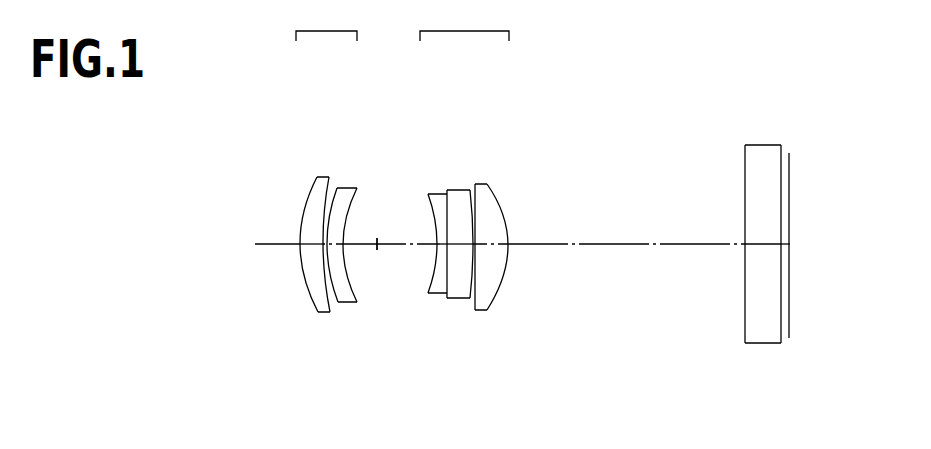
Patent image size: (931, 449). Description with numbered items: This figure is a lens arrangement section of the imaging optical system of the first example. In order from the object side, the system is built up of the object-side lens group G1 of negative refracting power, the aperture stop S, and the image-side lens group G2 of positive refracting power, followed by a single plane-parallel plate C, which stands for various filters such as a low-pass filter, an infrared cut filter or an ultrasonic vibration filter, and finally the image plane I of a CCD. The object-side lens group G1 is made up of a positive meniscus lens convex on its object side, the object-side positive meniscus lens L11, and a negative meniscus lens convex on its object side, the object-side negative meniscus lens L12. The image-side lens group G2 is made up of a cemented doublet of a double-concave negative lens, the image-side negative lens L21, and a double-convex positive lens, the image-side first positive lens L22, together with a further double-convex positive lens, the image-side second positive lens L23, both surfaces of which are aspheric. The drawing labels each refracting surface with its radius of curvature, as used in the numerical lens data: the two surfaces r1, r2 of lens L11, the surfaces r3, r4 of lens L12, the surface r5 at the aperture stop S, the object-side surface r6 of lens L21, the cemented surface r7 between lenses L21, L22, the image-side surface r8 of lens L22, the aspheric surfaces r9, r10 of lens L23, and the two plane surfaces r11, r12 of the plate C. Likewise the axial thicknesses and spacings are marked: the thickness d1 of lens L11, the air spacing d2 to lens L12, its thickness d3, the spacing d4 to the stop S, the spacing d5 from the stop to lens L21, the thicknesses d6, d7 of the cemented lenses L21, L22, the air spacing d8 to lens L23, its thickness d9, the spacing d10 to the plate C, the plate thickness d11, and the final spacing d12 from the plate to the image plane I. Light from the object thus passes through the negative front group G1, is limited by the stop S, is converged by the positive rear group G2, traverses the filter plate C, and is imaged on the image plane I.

The object-side lens group G1 is at (326, 22).
The image-side lens group G2 is at (464, 22).
The object-side positive meniscus lens L11 is at (317, 176).
The object-side negative meniscus lens L12 is at (345, 187).
The image-side negative lens L21 is at (427, 192).
The image-side first positive lens L22 is at (449, 188).
The image-side second positive lens L23 is at (490, 186).
The radius of curvature of first lens surface r1 is at (303, 197).
The radius of curvature of second lens surface r2 is at (320, 177).
The radius of curvature of third lens surface r3 is at (336, 188).
The radius of curvature of fourth lens surface r4 is at (356, 188).
The radius of curvature of fifth surface r5 is at (377, 206).
The radius of curvature of sixth lens surface r6 is at (428, 207).
The radius of curvature of seventh lens surface r7 is at (444, 192).
The radius of curvature of eighth lens surface r8 is at (468, 190).
The radius of curvature of ninth lens surface r9 is at (477, 183).
The radius of curvature of tenth lens surface r10 is at (505, 194).
The radius of curvature of eleventh surface r11 is at (744, 156).
The radius of curvature of twelfth surface r12 is at (784, 152).
The thickness of first lens d1 is at (313, 259).
The spacing between first and second lenses d2 is at (333, 307).
The thickness of second lens d3 is at (343, 296).
The spacing between second lens and aperture stop d4 is at (360, 259).
The spacing between aperture stop and image-side lens group d5 is at (408, 259).
The thickness of negative lens L21 d6 is at (432, 284).
The thickness of positive lens L22 d7 is at (460, 259).
The spacing between L22 and L23 d8 is at (466, 298).
The thickness of positive lens L23 d9 is at (491, 259).
The spacing between L23 and filter plate d10 is at (626, 259).
The thickness of filter plate d11 is at (763, 260).
The spacing between filter plate and image plane d12 is at (784, 330).
The aperture stop S is at (377, 288).
The cover glass C is at (766, 345).
The image plane I is at (792, 290).